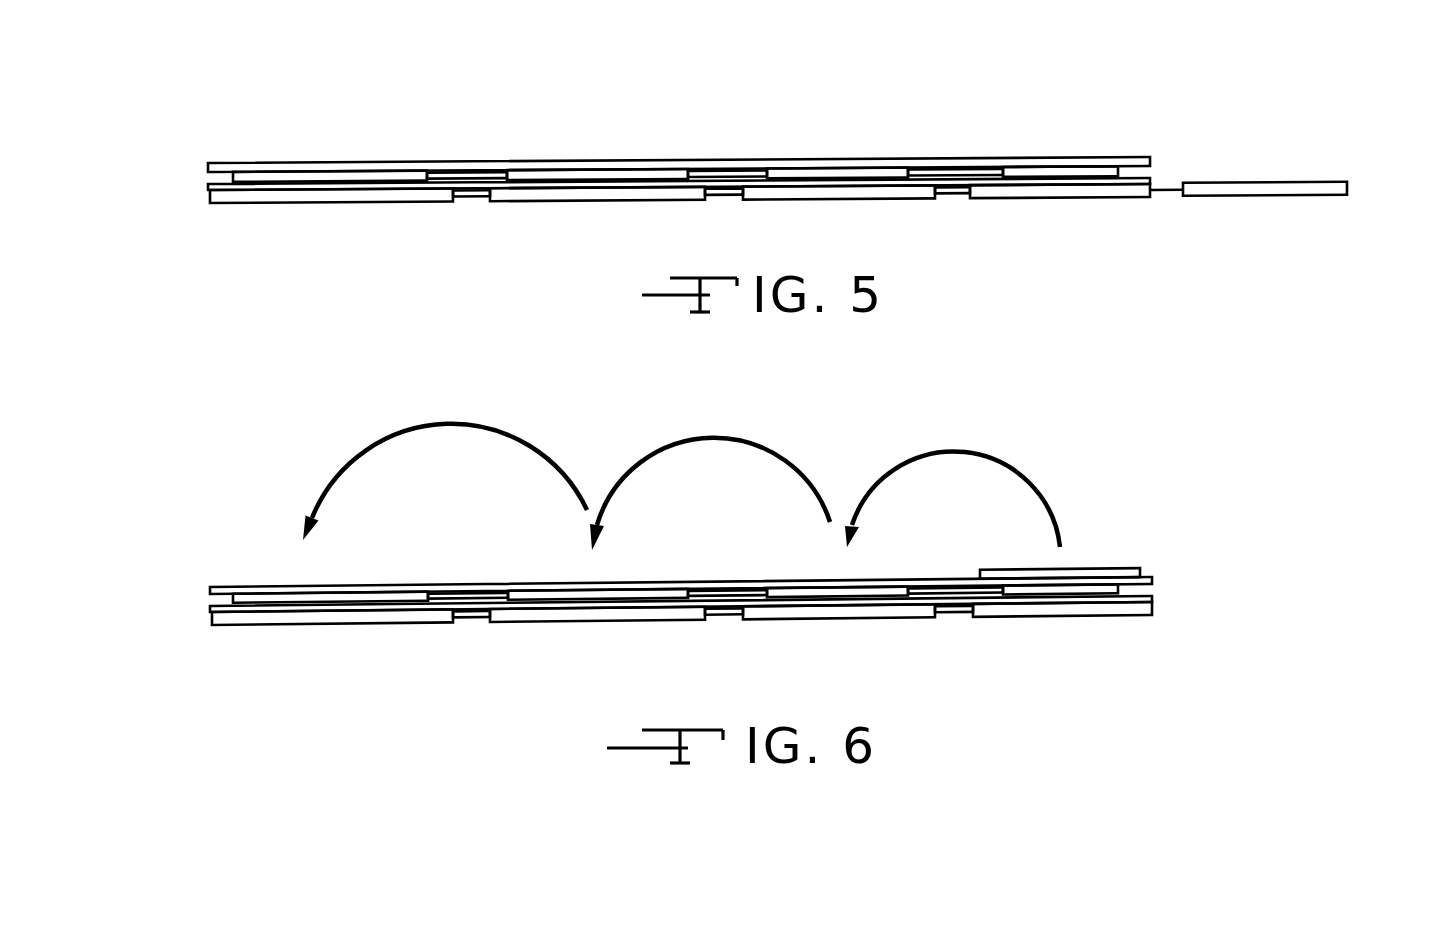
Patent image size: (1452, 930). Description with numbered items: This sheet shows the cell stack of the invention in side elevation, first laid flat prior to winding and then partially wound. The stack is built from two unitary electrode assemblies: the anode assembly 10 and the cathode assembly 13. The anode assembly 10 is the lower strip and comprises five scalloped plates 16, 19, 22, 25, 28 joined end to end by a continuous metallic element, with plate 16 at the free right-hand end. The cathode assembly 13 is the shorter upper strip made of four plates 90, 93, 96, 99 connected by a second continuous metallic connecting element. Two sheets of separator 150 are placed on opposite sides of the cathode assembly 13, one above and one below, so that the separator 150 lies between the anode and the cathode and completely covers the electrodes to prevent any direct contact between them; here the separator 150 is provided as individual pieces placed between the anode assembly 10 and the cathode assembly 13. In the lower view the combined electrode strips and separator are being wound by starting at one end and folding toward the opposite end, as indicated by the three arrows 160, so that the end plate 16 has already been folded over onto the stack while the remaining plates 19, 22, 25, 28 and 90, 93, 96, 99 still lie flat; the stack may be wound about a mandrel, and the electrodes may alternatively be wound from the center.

In FIG. 5, the anode assembly 10 is at (775, 161).
In FIG. 5, the cathode assembly 13 is at (1090, 172).
In FIG. 5, the plate 16 is at (1253, 190).
In FIG. 6, the plate 16 is at (1077, 571).
In FIG. 5, the plate 19 is at (1068, 190).
In FIG. 6, the plate 19 is at (1063, 610).
In FIG. 5, the plate 22 is at (822, 195).
In FIG. 6, the plate 22 is at (822, 612).
In FIG. 5, the plate 25 is at (594, 193).
In FIG. 6, the plate 25 is at (580, 615).
In FIG. 5, the plate 28 is at (272, 195).
In FIG. 6, the plate 28 is at (357, 618).
In FIG. 5, the plate 90 is at (1046, 172).
In FIG. 6, the plate 90 is at (1097, 593).
In FIG. 5, the plate 93 is at (822, 178).
In FIG. 6, the plate 93 is at (865, 596).
In FIG. 5, the plate 96 is at (562, 176).
In FIG. 6, the plate 96 is at (590, 598).
In FIG. 5, the plate 99 is at (340, 178).
In FIG. 6, the plate 99 is at (317, 601).
In FIG. 5, the separator 150 is at (216, 163).
In FIG. 6, the separator 150 is at (213, 588).
In FIG. 6, the arrows 160 is at (447, 421).